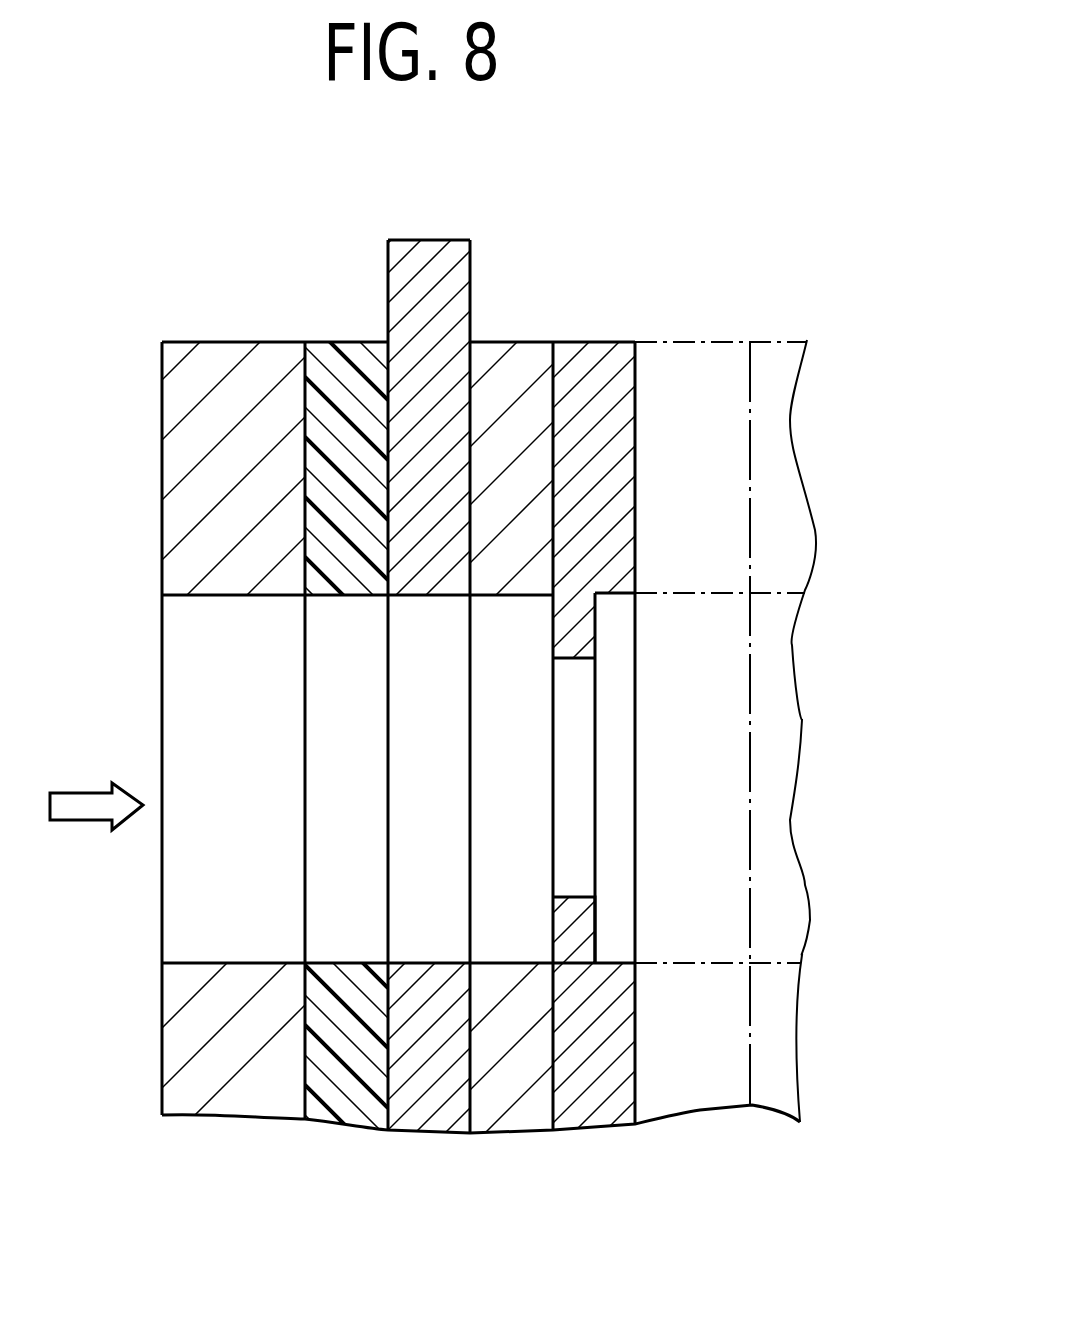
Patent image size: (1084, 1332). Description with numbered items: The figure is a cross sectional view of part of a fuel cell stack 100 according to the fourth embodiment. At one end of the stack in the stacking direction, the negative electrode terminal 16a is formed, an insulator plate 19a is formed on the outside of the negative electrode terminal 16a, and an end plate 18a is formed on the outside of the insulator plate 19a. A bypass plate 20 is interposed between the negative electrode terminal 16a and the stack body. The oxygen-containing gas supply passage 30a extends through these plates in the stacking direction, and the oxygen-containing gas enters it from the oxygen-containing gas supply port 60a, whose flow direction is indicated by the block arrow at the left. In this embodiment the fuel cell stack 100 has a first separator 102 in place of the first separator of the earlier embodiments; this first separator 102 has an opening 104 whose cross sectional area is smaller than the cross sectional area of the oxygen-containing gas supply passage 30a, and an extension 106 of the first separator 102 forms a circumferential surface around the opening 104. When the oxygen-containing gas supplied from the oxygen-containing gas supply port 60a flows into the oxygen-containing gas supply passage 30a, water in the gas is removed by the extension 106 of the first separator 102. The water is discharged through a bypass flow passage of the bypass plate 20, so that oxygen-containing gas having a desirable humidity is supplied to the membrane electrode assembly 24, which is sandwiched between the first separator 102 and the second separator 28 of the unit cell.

The negative electrode terminal 16a is at (428, 282).
The end plate 18a is at (225, 380).
The insulator plate 19a is at (347, 383).
The bypass plate 20 is at (512, 335).
The oxygen-containing gas supply port 60a is at (203, 697).
The oxygen-containing gas supply passage 30a is at (613, 743).
The fuel cell stack 100 is at (745, 213).
The first separator 102 is at (590, 1137).
The opening 104 is at (573, 825).
The extension 106 is at (580, 927).
The membrane electrode assembly 24 is at (693, 1112).
The second separator 28 is at (802, 1122).